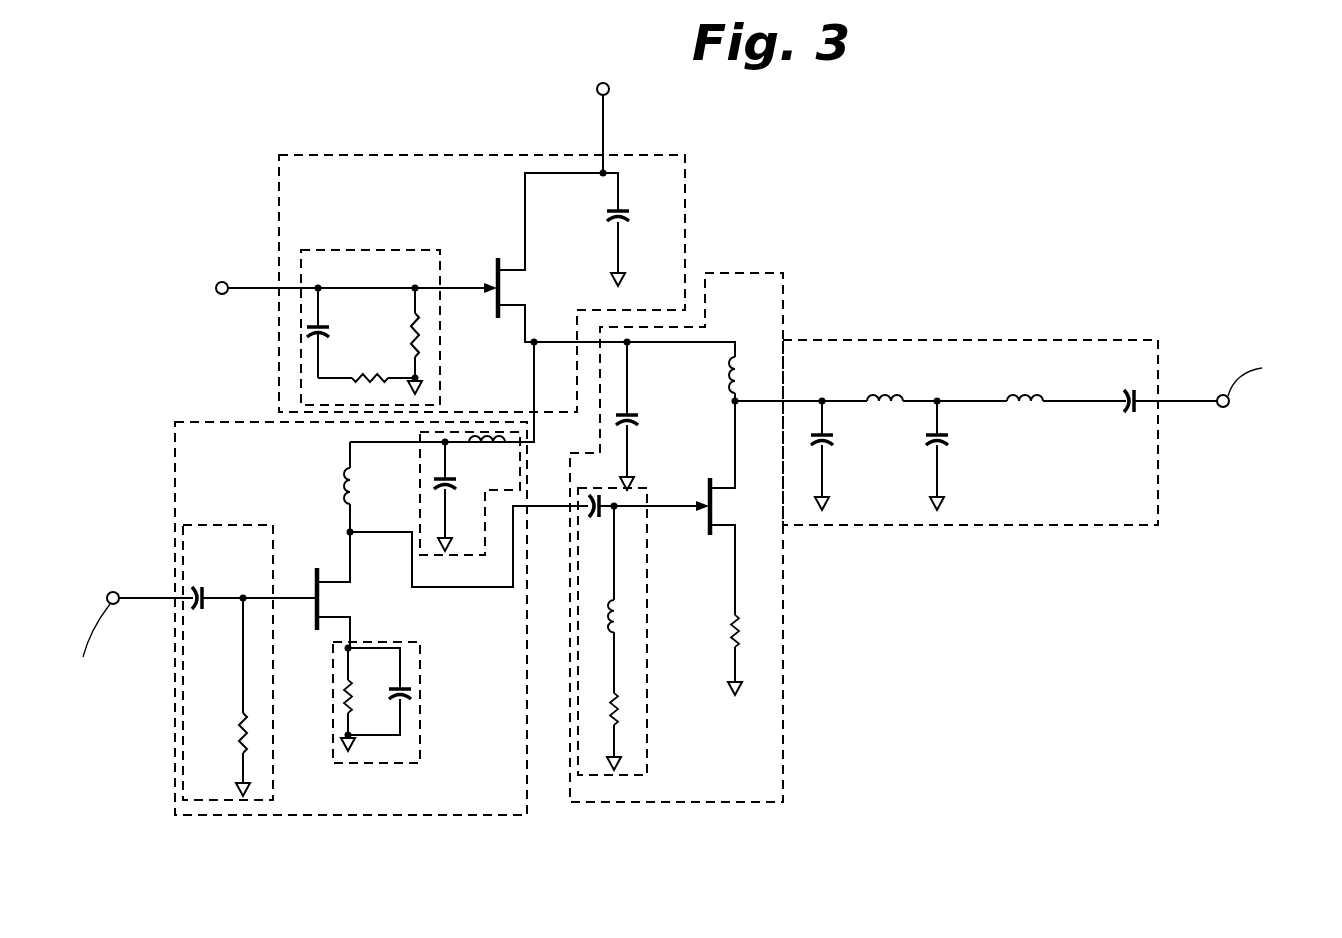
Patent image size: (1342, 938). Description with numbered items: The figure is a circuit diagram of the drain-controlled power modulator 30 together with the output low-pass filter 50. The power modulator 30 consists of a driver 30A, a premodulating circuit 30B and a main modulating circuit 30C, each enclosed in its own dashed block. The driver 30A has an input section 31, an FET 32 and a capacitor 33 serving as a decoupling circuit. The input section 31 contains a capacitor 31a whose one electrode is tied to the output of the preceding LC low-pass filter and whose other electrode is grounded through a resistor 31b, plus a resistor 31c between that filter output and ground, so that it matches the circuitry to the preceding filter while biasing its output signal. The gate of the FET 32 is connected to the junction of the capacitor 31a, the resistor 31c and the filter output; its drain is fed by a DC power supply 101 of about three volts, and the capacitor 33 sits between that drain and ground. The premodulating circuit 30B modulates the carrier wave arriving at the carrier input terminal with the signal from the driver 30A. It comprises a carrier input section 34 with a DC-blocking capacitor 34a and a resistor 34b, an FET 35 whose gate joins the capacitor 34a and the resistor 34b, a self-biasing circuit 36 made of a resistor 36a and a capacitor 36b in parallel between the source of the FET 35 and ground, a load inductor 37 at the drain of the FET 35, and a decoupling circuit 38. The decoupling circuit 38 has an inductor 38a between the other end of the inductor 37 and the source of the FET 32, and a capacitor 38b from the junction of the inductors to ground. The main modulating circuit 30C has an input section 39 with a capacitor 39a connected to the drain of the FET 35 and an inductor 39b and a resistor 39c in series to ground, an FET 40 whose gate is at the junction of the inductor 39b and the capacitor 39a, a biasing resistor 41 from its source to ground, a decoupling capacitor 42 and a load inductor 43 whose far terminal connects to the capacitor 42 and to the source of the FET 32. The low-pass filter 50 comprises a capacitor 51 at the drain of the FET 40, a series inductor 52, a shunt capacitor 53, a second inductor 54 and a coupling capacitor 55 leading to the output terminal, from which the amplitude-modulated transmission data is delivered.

The drain-controlled power modulator 30 is at (190, 143).
The driver 30A is at (452, 155).
The premodulating circuit 30B is at (397, 815).
The main modulating circuit 30C is at (740, 802).
The input section 31 is at (362, 250).
The capacitor 31a is at (306, 337).
The resistor 31b is at (365, 375).
The resistor 31c is at (420, 328).
The FET 32 is at (505, 290).
The capacitor 33 is at (608, 218).
The carrier input section 34 is at (230, 525).
The capacitor 34a is at (203, 608).
The resistor 34b is at (240, 732).
The FET 35 is at (325, 598).
The self-biasing circuit 36 is at (425, 650).
The resistor 36a is at (340, 697).
The capacitor 36b is at (408, 693).
The inductor 37 is at (345, 493).
The decoupling circuit 38 is at (462, 555).
The inductor 38a is at (487, 447).
The capacitor 38b is at (437, 483).
The input section 39 is at (650, 565).
The capacitor 39a is at (605, 497).
The inductor 39b is at (618, 618).
The resistor 39c is at (620, 708).
The FET 40 is at (716, 506).
The resistor 41 is at (730, 630).
The capacitor 42 is at (640, 418).
The inductor 43 is at (728, 378).
The low-pass filter 50 is at (1085, 340).
The capacitor 51 is at (835, 440).
The inductor 52 is at (887, 396).
The capacitor 53 is at (950, 440).
The inductor 54 is at (1027, 396).
The capacitor 55 is at (1125, 418).
The DC power supply 101 is at (609, 91).